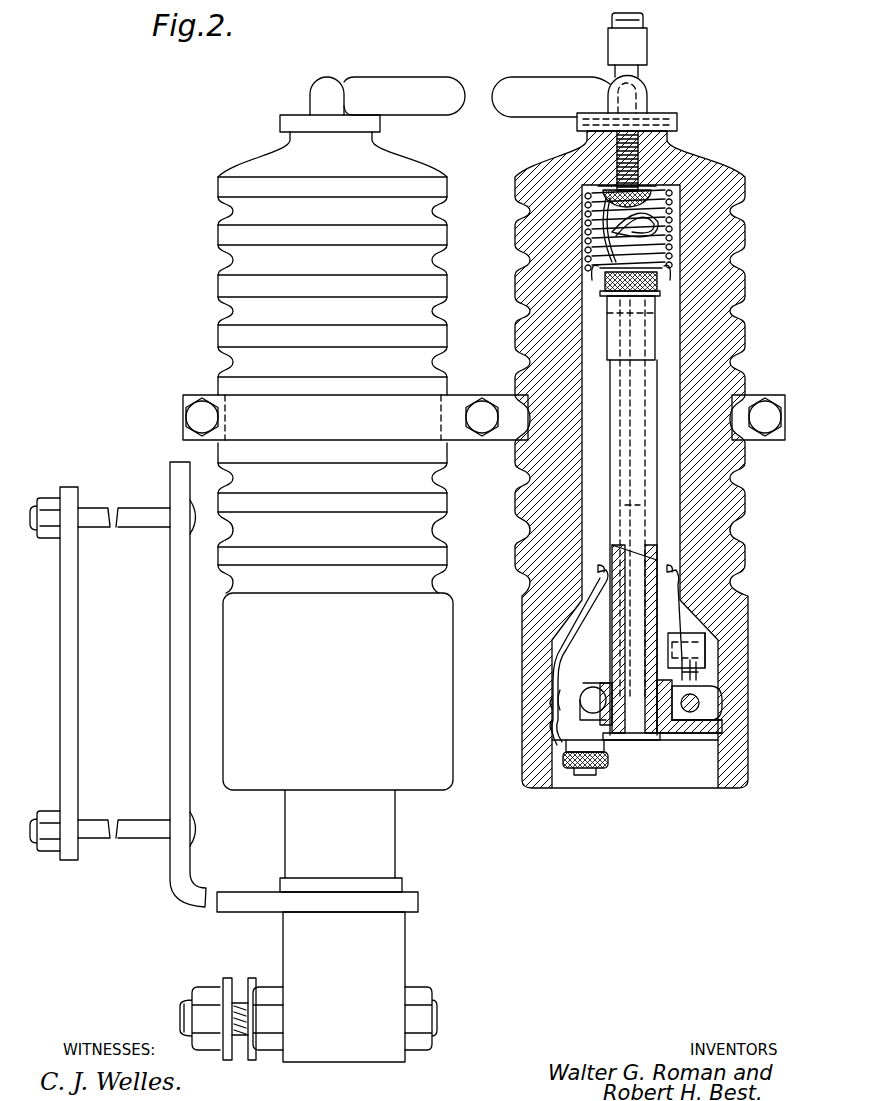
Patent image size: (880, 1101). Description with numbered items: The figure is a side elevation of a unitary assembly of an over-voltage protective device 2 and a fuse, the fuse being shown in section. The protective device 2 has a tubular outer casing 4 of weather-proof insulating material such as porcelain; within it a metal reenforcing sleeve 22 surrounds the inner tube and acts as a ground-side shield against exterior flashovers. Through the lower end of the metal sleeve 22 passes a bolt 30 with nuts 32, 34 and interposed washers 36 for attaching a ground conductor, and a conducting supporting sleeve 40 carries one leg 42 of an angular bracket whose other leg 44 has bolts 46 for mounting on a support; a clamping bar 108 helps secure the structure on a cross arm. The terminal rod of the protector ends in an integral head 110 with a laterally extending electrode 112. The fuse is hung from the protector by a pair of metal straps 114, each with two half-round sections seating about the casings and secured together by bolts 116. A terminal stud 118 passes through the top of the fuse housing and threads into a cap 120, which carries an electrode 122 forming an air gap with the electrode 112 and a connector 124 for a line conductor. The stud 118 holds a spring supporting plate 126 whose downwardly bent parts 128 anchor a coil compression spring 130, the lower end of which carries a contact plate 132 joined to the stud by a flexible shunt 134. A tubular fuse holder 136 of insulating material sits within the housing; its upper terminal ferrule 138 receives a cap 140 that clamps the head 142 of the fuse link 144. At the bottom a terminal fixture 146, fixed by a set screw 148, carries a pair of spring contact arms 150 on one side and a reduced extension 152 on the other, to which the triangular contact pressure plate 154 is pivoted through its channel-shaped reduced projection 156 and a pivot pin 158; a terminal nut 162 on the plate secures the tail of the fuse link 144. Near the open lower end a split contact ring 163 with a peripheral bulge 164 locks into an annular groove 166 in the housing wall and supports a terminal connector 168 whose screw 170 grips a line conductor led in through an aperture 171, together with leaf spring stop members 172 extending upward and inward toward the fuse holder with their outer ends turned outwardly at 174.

The over-voltage protective device 2 is at (331, 536).
The outer casing 4 is at (225, 283).
The metal reenforcing sleeve 22 is at (395, 846).
The bolt 30 is at (437, 1022).
The nut 32 is at (270, 1052).
The nut 34 is at (207, 1050).
The washers 36 is at (252, 1063).
The supporting sleeve 40 is at (405, 953).
The leg of supporting bracket 42 is at (418, 902).
The leg of supporting bracket 44 is at (172, 638).
The bolts 46 is at (135, 512).
The clamping bar 108 is at (78, 670).
The integral head 110 is at (280, 122).
The electrode 112 is at (399, 88).
The metal straps 114 is at (300, 405).
The bolts 116 is at (200, 408).
The terminal stud 118 is at (640, 152).
The cap 120 is at (677, 115).
The electrode 122 is at (535, 80).
The connector 124 is at (647, 45).
The spring supporting plate 126 is at (685, 178).
The downwardly bent parts 128 is at (650, 197).
The coil compression spring 130 is at (667, 240).
The contact plate 132 is at (660, 282).
The flexible shunt 134 is at (660, 227).
The tubular fuse holder 136 is at (650, 465).
The terminal ferrule 138 is at (655, 330).
The cap 140 is at (660, 294).
The head of fuse link 142 is at (655, 313).
The fuse link 144 is at (630, 505).
The terminal fixture 146 is at (600, 706).
The set screw 148 is at (597, 688).
The spring contact arms 150 is at (580, 678).
The reduced extension 152 is at (728, 722).
The contact pressure plate 154 is at (690, 740).
The reduced projection 156 is at (705, 710).
The pivot pin 158 is at (725, 703).
The terminal nut 162 is at (609, 762).
The split contact ring 163 is at (556, 693).
The peripheral bulge 164 is at (545, 703).
The annular groove 166 is at (545, 725).
The terminal connector 168 is at (710, 660).
The screw 170 is at (715, 668).
The aperture 171 is at (745, 645).
The leaf spring stop members 172 is at (690, 597).
The outwardly turned ends 174 is at (700, 578).